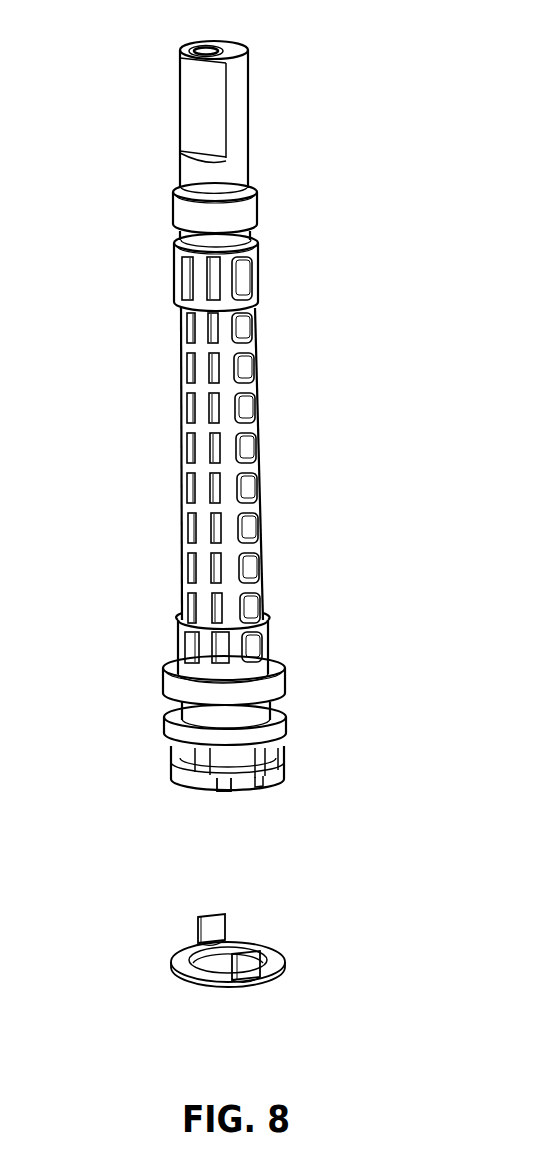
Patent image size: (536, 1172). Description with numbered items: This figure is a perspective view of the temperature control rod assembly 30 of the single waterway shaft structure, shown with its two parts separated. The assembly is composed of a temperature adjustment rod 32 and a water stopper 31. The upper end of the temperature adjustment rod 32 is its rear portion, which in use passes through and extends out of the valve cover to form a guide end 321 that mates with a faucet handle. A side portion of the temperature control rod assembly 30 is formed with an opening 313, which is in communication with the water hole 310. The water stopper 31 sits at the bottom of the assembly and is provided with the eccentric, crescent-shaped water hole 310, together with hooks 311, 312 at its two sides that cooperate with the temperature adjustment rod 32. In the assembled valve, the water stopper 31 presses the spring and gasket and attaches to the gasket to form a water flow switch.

The guide end 321 is at (192, 111).
The temperature adjustment rod 32 is at (180, 400).
The temperature control rod assembly 30 is at (247, 821).
The opening 313 is at (228, 759).
The water stopper 31 is at (185, 963).
The water hole 310 is at (228, 952).
The hook 311 is at (200, 923).
The hook 312 is at (291, 960).